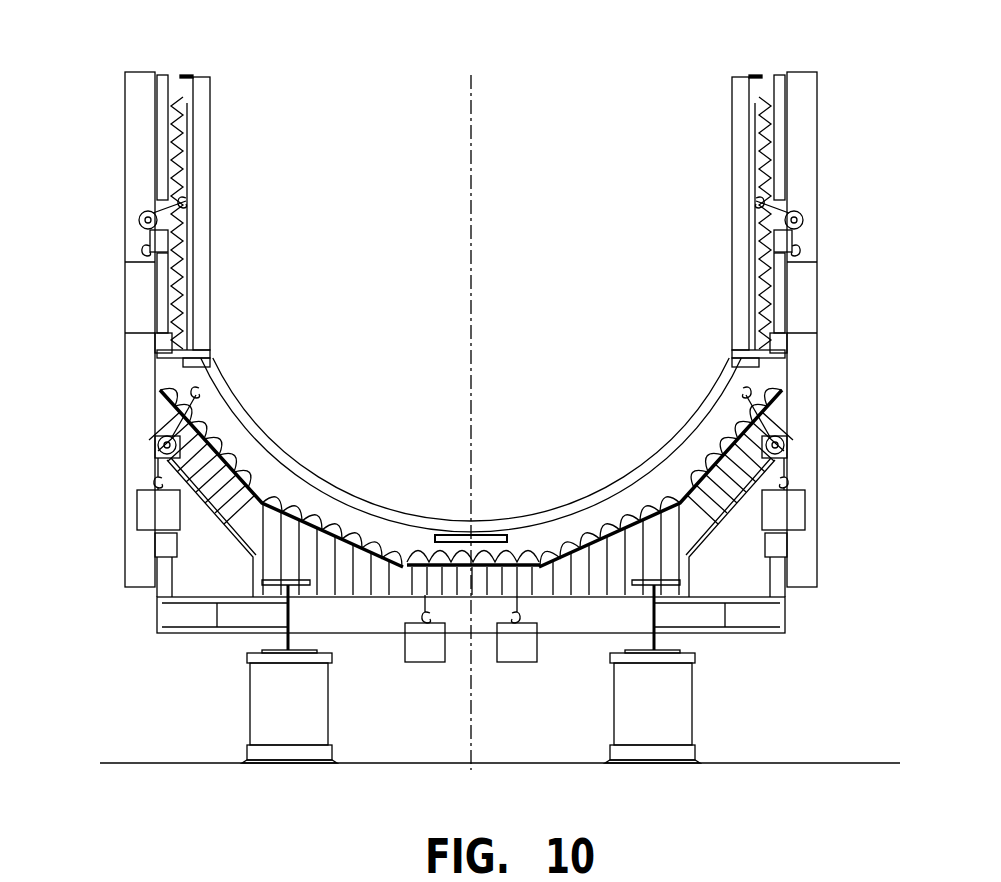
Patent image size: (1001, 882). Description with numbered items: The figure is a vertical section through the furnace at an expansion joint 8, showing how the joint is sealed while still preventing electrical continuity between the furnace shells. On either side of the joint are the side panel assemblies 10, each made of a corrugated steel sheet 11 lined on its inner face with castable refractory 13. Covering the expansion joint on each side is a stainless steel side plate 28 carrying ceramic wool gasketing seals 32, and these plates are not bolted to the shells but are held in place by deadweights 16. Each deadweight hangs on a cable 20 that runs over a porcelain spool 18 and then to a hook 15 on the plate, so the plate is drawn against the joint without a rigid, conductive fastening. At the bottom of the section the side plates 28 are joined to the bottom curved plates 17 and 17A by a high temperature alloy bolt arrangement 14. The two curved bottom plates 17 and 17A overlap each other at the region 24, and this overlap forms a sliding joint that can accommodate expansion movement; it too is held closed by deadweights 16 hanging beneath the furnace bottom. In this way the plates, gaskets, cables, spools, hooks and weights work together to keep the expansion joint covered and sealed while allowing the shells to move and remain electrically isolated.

The expansion joint 8 is at (270, 450).
The side panel assemblies 10 is at (732, 157).
The corrugated steel sheet 11 is at (185, 97).
The castable refractory 13 is at (753, 76).
The high temperature alloy bolt arrangement 14 is at (740, 355).
The hooks 15 is at (188, 200).
The deadweights 16 is at (137, 287).
The bottom curved plate 17 is at (387, 527).
The bottom curved plate 17A is at (563, 517).
The porcelain spools 18 is at (147, 215).
The cables 20 is at (145, 233).
The overlap of bottom plates 24 is at (468, 538).
The stainless steel side plates 28 is at (195, 158).
The ceramic wool gasketing seals 32 is at (197, 80).